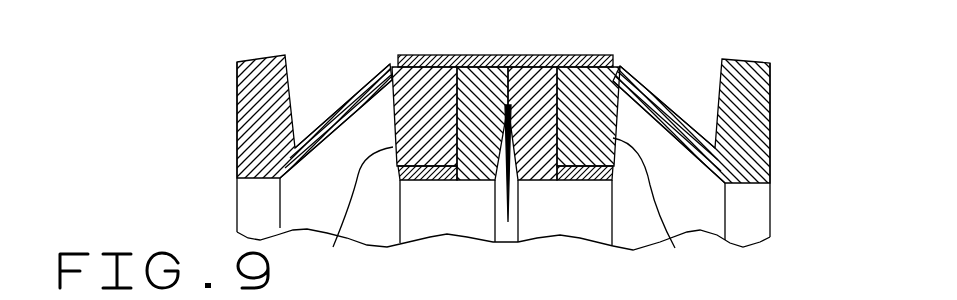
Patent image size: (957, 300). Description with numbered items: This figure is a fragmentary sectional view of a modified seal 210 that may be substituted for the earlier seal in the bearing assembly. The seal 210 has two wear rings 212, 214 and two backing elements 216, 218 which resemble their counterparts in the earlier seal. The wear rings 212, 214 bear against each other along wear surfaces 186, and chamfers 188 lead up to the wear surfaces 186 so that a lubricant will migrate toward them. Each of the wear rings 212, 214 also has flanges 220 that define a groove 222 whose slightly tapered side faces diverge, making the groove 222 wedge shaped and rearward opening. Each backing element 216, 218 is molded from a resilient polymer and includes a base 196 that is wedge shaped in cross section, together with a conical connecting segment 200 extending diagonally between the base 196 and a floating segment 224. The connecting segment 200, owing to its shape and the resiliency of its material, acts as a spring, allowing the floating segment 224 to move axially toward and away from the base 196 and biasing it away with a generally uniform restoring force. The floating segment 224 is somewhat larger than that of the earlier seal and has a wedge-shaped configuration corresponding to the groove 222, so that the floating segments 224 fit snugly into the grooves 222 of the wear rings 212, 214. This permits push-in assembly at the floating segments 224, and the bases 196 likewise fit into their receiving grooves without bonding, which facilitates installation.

The wear surfaces 186 is at (503, 75).
The chamfers 188 is at (508, 240).
The base 196 is at (248, 105).
The connecting segment 200 is at (348, 100).
The modified seal 210 is at (783, 54).
The wear ring 212 is at (468, 225).
The wear ring 214 is at (553, 218).
The backing element 216 is at (300, 200).
The backing element 218 is at (703, 215).
The flanges 220 is at (428, 56).
The groove 222 is at (420, 92).
The floating segment 224 is at (504, 209).